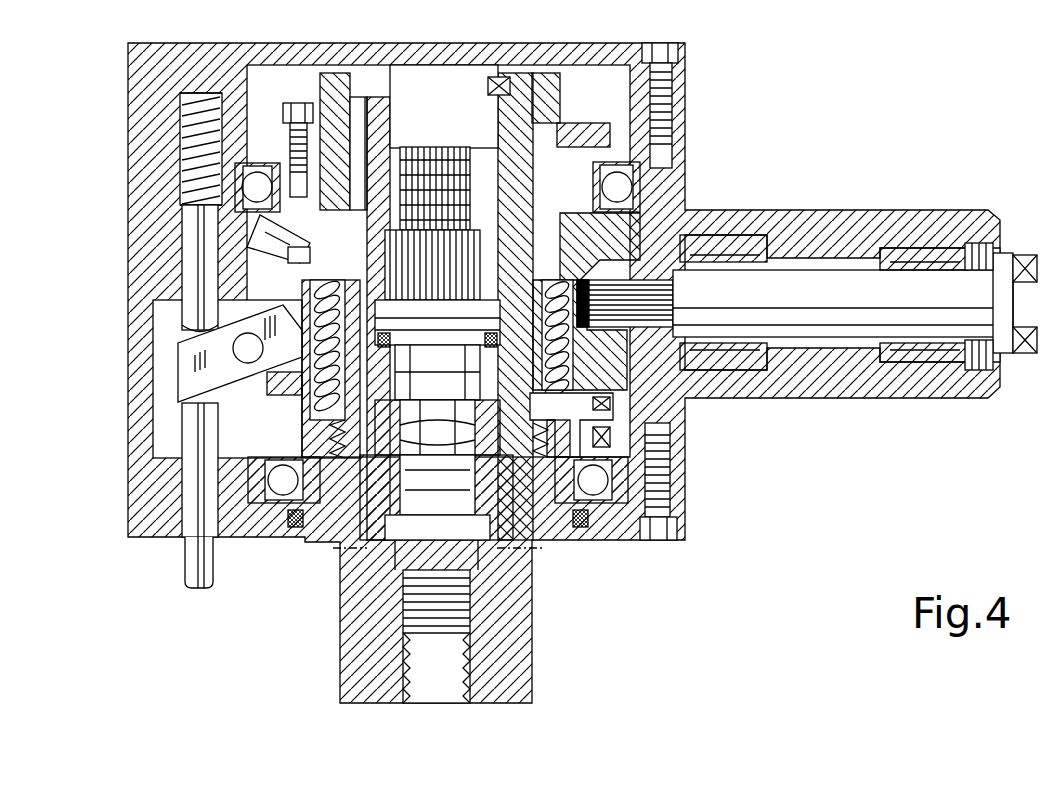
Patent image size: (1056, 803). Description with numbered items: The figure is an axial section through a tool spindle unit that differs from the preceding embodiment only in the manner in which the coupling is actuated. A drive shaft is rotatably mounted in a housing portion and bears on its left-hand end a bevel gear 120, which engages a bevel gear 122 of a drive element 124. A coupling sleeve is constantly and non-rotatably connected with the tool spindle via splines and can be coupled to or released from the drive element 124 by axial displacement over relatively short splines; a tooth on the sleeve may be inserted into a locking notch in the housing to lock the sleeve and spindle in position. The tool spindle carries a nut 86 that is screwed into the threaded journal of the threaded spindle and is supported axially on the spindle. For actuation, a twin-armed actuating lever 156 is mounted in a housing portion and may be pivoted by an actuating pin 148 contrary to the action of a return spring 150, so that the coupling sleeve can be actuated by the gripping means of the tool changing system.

The nut 86 is at (396, 110).
The bevel gear 120 is at (672, 225).
The bevel gear 122 is at (655, 185).
The drive element 124 is at (655, 145).
The actuating pin 148 is at (192, 570).
The return spring 150 is at (187, 168).
The twin-armed actuating lever 156 is at (182, 360).